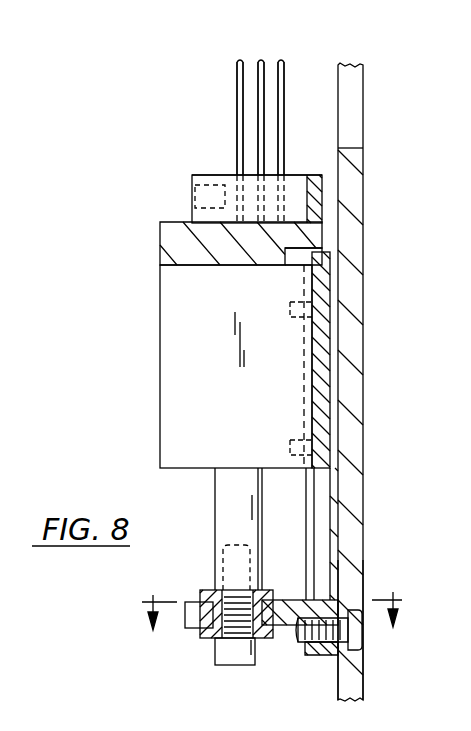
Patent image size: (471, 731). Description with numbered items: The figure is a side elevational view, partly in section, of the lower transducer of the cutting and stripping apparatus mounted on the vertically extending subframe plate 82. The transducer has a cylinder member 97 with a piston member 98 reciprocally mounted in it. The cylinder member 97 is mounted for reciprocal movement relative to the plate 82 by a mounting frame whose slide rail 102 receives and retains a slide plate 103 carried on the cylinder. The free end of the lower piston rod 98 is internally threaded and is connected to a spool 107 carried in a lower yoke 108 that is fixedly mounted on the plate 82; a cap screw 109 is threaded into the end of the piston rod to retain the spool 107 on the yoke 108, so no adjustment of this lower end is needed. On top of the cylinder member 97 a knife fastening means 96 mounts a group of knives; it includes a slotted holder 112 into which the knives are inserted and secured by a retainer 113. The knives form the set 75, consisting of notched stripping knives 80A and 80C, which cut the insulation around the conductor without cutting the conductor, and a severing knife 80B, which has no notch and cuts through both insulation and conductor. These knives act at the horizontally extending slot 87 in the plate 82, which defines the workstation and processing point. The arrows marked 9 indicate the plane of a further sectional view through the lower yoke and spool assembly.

The set of cutting and stripping knives 75 is at (219, 118).
The stripping knife 80A is at (237, 70).
The severing knife 80B is at (260, 66).
The stripping knife 80C is at (284, 70).
The horizontally extending slot 87 is at (348, 148).
The vertically extending plate 82 is at (366, 549).
The knife fastening means 96 is at (185, 175).
The slotted holder 112 is at (220, 174).
The retainer 113 is at (193, 217).
The cylinder member 97 is at (240, 348).
The slide plate 103 is at (320, 353).
The piston member 98 is at (214, 512).
The slide rail 102 is at (322, 500).
The spool 107 is at (205, 638).
The lower yoke 108 is at (190, 628).
The cap screw 109 is at (255, 661).
The section line 9- 9 is at (270, 612).